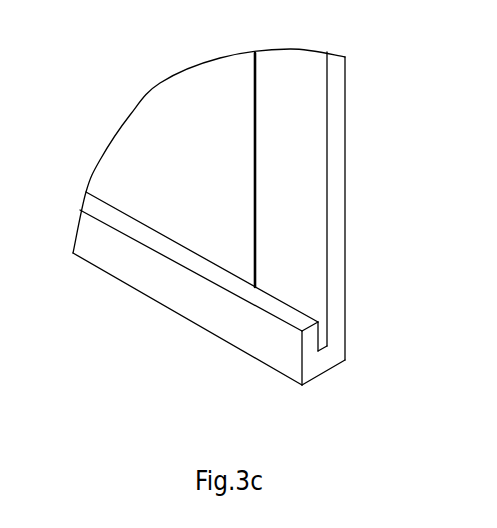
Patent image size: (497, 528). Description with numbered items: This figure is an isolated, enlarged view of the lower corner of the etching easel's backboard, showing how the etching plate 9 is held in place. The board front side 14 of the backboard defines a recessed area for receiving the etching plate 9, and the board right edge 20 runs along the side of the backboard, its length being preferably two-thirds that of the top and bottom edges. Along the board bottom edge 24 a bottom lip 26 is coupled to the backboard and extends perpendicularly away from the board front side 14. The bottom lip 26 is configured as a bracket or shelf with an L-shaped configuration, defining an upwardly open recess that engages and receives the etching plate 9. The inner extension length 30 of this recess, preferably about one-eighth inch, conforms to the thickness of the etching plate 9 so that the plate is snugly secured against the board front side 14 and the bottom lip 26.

The etching plate 9 is at (173, 115).
The board front side 14 is at (300, 183).
The board right edge 20 is at (335, 92).
The bottom lip 26 is at (176, 293).
The board bottom edge 24 is at (323, 372).
The inner extension length 30 is at (320, 348).